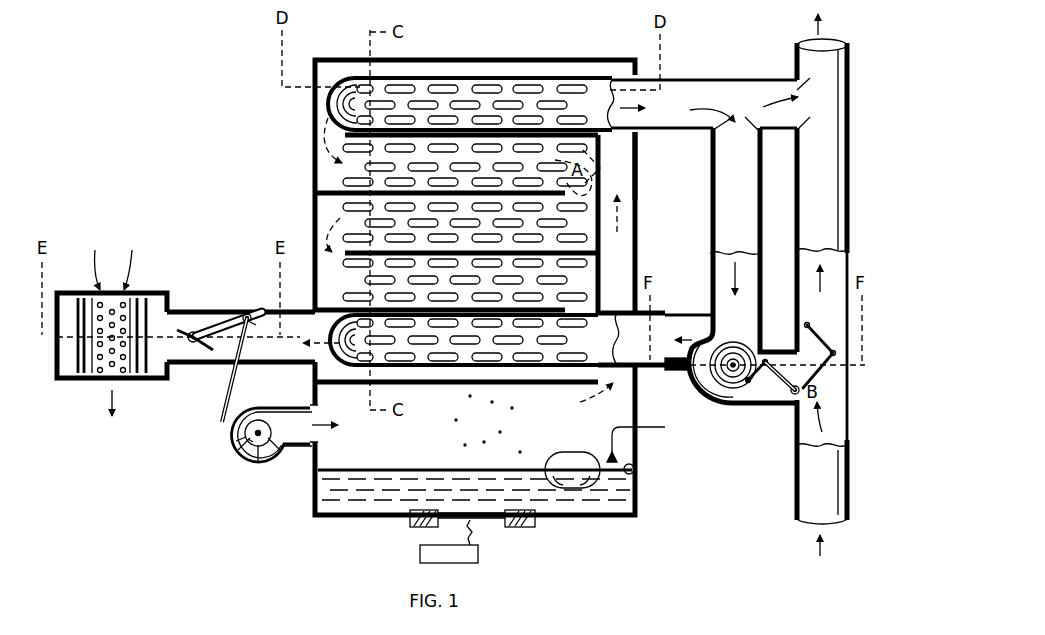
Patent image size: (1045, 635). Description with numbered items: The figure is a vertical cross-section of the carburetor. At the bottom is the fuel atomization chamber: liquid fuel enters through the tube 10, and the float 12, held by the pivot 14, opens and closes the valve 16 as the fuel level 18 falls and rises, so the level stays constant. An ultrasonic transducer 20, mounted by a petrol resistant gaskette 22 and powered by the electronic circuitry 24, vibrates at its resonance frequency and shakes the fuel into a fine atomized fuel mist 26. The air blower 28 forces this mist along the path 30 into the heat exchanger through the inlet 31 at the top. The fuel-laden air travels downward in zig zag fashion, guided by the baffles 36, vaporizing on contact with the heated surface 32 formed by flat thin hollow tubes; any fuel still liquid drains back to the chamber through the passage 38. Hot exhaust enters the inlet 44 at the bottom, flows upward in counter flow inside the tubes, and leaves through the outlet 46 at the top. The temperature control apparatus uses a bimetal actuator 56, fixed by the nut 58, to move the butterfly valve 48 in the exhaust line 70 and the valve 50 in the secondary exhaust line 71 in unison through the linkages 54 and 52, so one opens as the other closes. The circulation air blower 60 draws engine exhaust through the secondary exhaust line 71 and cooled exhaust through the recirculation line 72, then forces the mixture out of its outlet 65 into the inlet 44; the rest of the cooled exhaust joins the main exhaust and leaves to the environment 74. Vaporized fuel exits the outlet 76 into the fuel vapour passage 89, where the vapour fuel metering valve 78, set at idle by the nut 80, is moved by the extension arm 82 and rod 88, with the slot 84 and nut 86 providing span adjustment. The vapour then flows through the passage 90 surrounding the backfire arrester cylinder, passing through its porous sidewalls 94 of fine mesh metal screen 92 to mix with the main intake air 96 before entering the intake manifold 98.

The tube 10 is at (645, 434).
The float 12 is at (572, 470).
The pivot 14 is at (636, 471).
The valve 16 is at (609, 456).
The fuel level 18 is at (375, 468).
The ultrasonic transducer 20 is at (493, 523).
The petrol resistant gaskette 22 is at (535, 527).
The electronic circuitry 24 is at (420, 555).
The atomized fuel mist 26 is at (472, 287).
The air blower 28 is at (278, 441).
The path 30 is at (613, 224).
The inlet 31 is at (620, 166).
The heated surface 32 is at (358, 182).
The baffles 36 is at (338, 196).
The passage 38 is at (471, 361).
The inlet 44 is at (631, 339).
The outlet 46 is at (709, 104).
The valve 48 is at (820, 336).
The valve 50 is at (780, 358).
The linkage 52 is at (815, 373).
The linkage 54 is at (758, 375).
The bimetal actuator 56 is at (733, 355).
The nut 58 is at (735, 405).
The circulation air blower 60 is at (685, 313).
The outlet 65 is at (670, 345).
The exhaust line 70 is at (822, 478).
The secondary exhaust line 71 is at (762, 406).
The recirculation line 72 is at (753, 240).
The environment 74 is at (822, 227).
The outlet 76 is at (253, 327).
The vapour fuel metering valve 78 is at (180, 327).
The nut 80 is at (194, 344).
The extension arm 82 is at (209, 322).
The slot 84 is at (247, 313).
The nut 86 is at (249, 323).
The rod 88 is at (223, 405).
The fuel vapour passage 89 is at (183, 367).
The passage 90 is at (68, 365).
The fine mesh metal screen 92 is at (80, 320).
The porous sidewalls 94 is at (148, 373).
The main intake air 96 is at (113, 267).
The intake manifold 98 is at (113, 416).